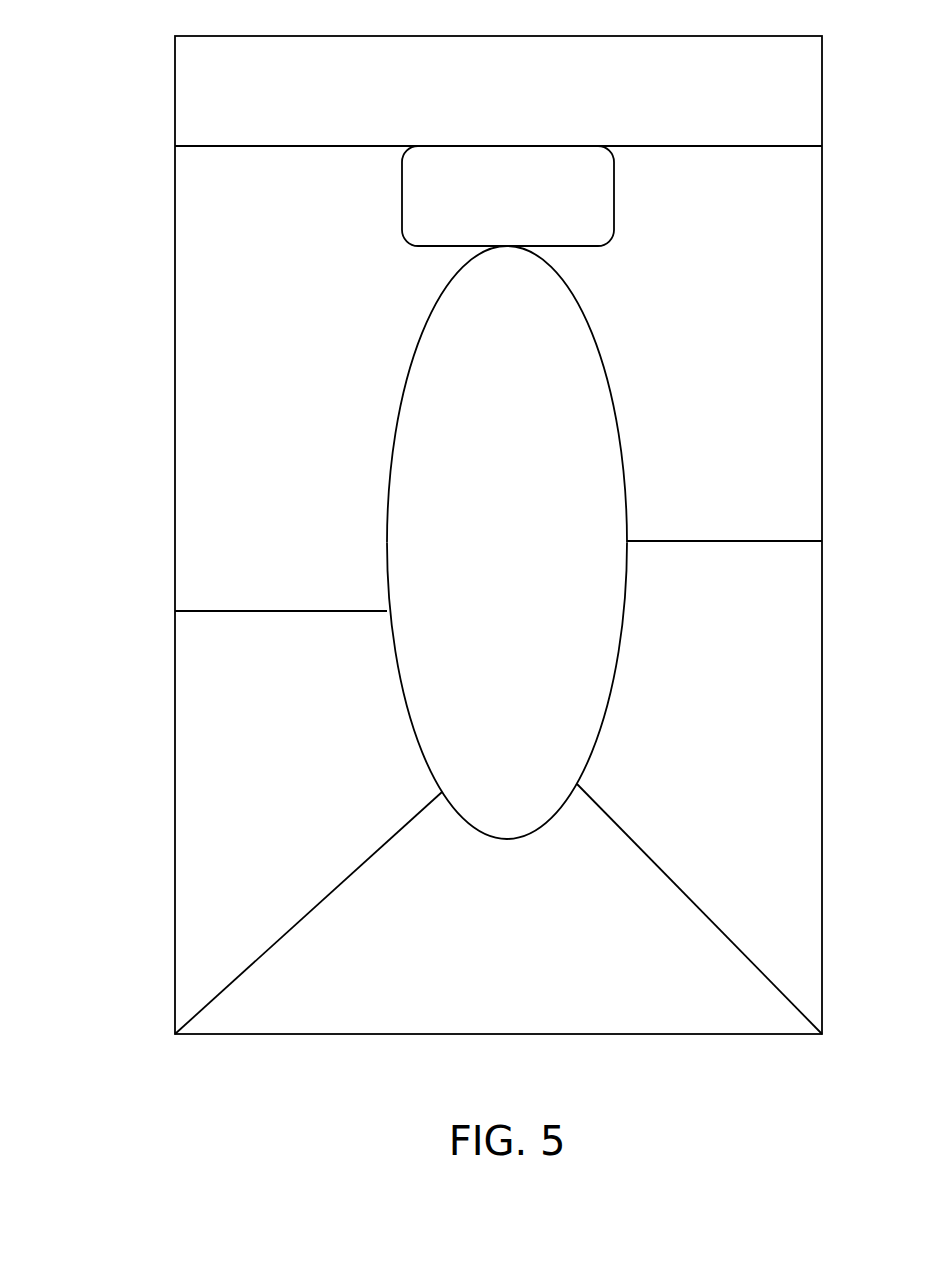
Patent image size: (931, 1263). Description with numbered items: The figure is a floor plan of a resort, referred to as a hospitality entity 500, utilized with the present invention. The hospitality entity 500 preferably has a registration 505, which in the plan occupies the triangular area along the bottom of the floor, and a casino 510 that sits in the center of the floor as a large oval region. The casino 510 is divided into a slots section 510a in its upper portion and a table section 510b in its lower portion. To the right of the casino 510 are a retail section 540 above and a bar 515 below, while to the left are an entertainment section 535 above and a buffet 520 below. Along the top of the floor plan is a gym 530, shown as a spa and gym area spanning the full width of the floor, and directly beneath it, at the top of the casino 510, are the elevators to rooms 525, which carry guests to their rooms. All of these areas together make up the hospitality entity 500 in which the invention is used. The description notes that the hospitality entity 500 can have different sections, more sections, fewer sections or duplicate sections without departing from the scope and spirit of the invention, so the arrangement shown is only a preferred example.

The hospitality entity 500 is at (128, 57).
The registration 505 is at (498, 909).
The casino 510 is at (507, 542).
The slots section 510a is at (507, 394).
The table section 510b is at (507, 691).
The bar 515 is at (712, 692).
The buffet 520 is at (264, 758).
The elevators to rooms 525 is at (508, 196).
The gym 530 is at (498, 116).
The entertainment section 535 is at (281, 448).
The retail section 540 is at (724, 431).